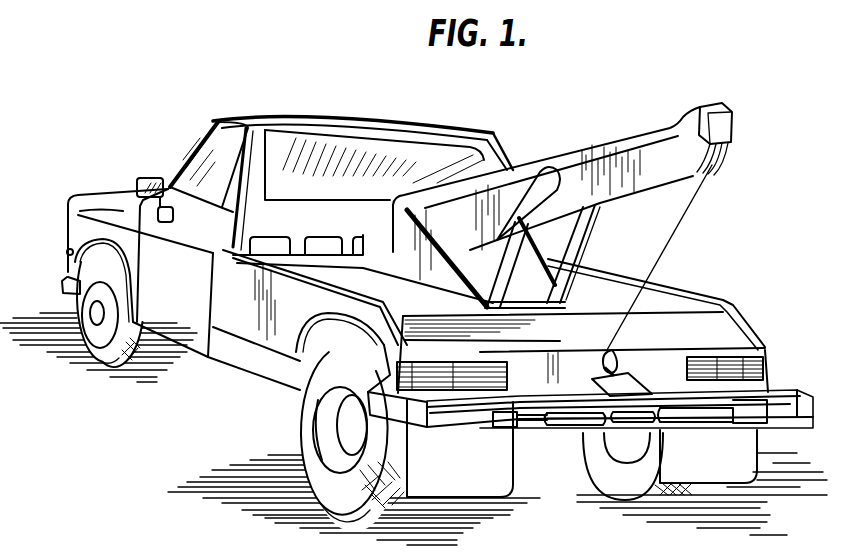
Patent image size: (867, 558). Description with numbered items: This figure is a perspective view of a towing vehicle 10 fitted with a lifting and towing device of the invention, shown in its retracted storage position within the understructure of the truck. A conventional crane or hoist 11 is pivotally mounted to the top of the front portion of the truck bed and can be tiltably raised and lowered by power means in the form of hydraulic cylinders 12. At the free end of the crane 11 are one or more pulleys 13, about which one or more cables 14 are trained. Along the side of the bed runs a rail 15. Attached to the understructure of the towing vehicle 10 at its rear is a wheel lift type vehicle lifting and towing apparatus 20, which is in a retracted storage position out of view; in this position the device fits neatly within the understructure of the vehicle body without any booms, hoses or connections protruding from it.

The towing vehicle 10 is at (413, 308).
The crane 11 is at (561, 158).
The hydraulic cylinders 12 is at (570, 249).
The pulleys 13 is at (719, 163).
The cables 14 is at (668, 240).
The bed side rail 15 is at (645, 306).
The vehicle lifting and towing apparatus 20 is at (622, 417).